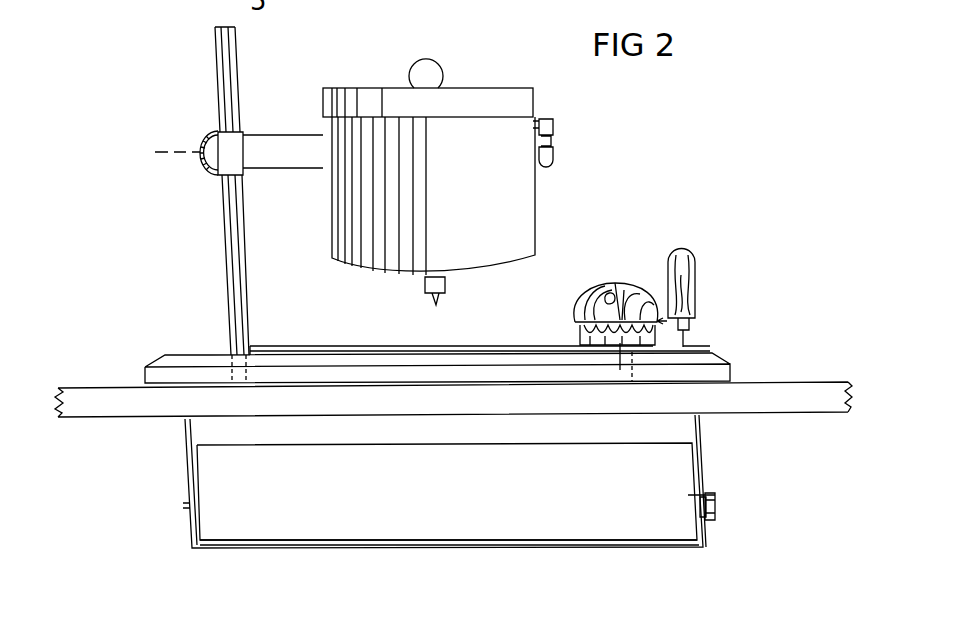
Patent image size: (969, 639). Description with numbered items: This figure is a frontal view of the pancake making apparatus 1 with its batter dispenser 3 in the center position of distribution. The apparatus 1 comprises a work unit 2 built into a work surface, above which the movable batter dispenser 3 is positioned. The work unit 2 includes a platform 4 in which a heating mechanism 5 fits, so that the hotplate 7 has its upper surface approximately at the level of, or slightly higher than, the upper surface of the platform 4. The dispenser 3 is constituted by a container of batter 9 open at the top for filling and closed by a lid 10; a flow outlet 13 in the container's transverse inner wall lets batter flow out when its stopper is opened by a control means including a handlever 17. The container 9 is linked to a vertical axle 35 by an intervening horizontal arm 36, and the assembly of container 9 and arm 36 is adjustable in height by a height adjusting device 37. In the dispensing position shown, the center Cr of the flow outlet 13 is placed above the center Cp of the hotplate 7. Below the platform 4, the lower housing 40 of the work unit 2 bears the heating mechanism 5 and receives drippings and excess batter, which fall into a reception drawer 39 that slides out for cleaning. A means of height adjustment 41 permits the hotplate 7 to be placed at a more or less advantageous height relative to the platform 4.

The pancake making apparatus 1 is at (676, 149).
The work unit 2 is at (635, 273).
The batter dispenser 3 is at (446, 137).
The platform 4 is at (198, 373).
The heating mechanism 5 is at (676, 298).
The hotplate 7 is at (544, 345).
The container of batter 9 is at (331, 218).
The lid 10 is at (367, 88).
The flow outlet 13 is at (428, 300).
The handlever 17 is at (558, 147).
The vertical axle 35 is at (228, 235).
The horizontal arm 36 is at (283, 142).
The height adjusting device 37 is at (197, 142).
The reception drawer 39 is at (365, 513).
The lower housing 40 is at (180, 473).
The means of height adjustment 41 is at (717, 497).
The center of the hotplate Cp is at (436, 341).
The center of the flow outlet Cr is at (437, 303).